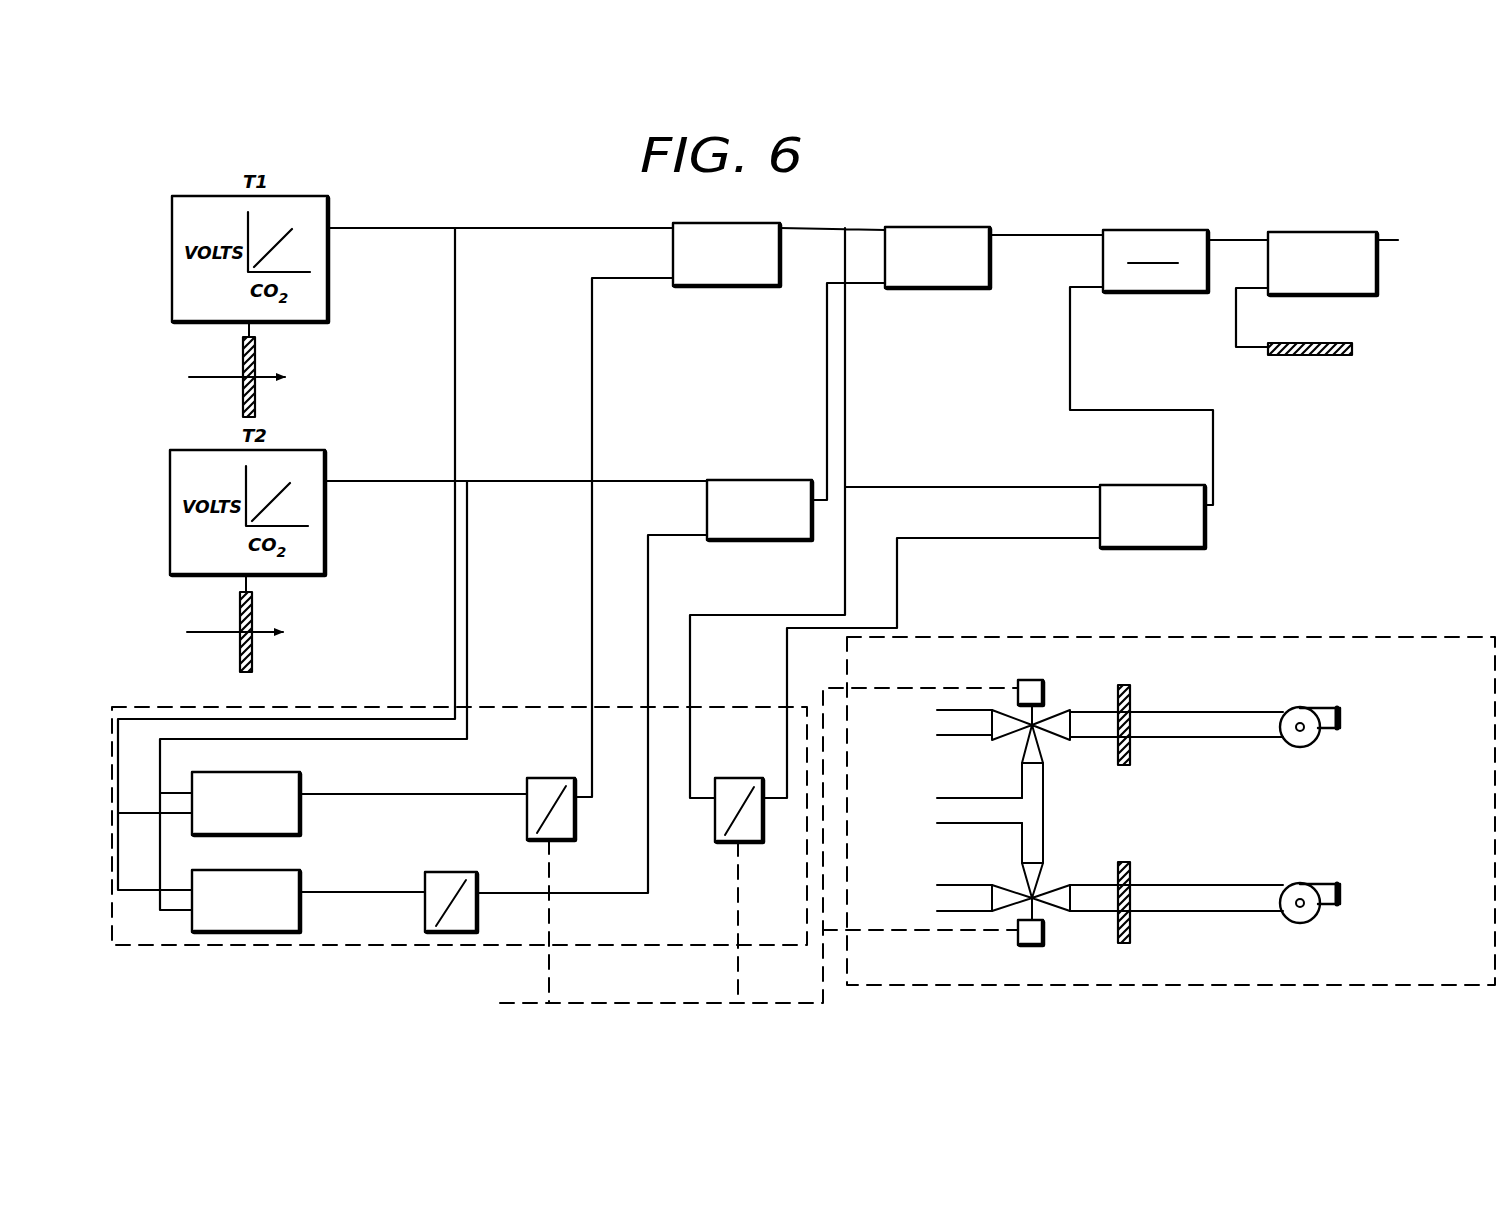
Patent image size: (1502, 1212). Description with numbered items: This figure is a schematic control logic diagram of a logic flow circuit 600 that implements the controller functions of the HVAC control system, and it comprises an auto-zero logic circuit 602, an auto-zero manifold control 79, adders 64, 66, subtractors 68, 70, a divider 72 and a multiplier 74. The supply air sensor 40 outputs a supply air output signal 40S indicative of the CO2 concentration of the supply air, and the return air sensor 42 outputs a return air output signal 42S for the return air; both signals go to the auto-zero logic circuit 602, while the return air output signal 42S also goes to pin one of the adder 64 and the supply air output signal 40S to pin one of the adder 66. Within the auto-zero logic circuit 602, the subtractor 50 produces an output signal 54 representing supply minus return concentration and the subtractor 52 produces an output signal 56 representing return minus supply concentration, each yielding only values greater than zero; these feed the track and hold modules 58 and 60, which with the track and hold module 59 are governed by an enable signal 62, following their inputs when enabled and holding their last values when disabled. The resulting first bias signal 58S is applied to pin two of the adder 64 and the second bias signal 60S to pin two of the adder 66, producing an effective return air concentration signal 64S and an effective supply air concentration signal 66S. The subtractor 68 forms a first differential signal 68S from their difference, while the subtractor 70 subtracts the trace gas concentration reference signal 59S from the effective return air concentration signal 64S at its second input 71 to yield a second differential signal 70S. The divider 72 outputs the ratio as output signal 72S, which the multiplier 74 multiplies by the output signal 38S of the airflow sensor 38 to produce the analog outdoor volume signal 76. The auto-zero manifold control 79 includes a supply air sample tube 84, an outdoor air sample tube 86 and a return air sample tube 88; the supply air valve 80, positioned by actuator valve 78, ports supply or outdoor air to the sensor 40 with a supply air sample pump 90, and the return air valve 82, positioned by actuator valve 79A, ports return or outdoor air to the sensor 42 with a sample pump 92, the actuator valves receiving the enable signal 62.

The logic flow circuit 600 is at (533, 162).
The airflow sensor 38 is at (1333, 357).
The output signal 38S is at (1236, 310).
The supply air sensor 40 is at (253, 656).
The supply air output signal 40S is at (396, 484).
The return air sensor 42 is at (256, 401).
The return air output signal 42S is at (400, 231).
The subtractor 50 is at (284, 772).
The subtractor 52 is at (284, 870).
The output signal 54 is at (450, 792).
The output signal 56 is at (364, 894).
The track and hold module 58 is at (576, 820).
The first bias signal 58S is at (590, 363).
The track and hold module 59 is at (714, 830).
The trace gas concentration reference signal 59S is at (880, 626).
The track and hold module 60 is at (478, 905).
The second bias signal 60S is at (647, 731).
The enable signal 62 is at (550, 905).
The adder 64 is at (728, 290).
The effective return air concentration signal 64S is at (802, 228).
The adder 66 is at (800, 478).
The effective supply air concentration signal 66S is at (828, 380).
The subtractor 68 is at (912, 292).
The first differential signal 68S is at (1040, 238).
The subtractor 70 is at (1108, 485).
The second differential signal 70S is at (1203, 410).
The LM6 second input 71 is at (1068, 543).
The divider 72 is at (1120, 295).
The output signal 72S is at (1225, 240).
The multiplier 74 is at (1356, 298).
The analog outdoor volume signal 76 is at (1396, 238).
The actuator valve 78 is at (1032, 680).
The auto-zero manifold control 79 is at (976, 636).
The actuator valve 79A is at (1032, 945).
The supply air valve 80 is at (1040, 737).
The return air valve 82 is at (1040, 890).
The supply air sample tube 84 is at (985, 740).
The outdoor air sample tube 86 is at (988, 797).
The return air sample tube 88 is at (988, 884).
The supply air sample pump 90 is at (1330, 707).
The sample pump 92 is at (1332, 924).
The auto-zero logic circuit 602 is at (545, 706).